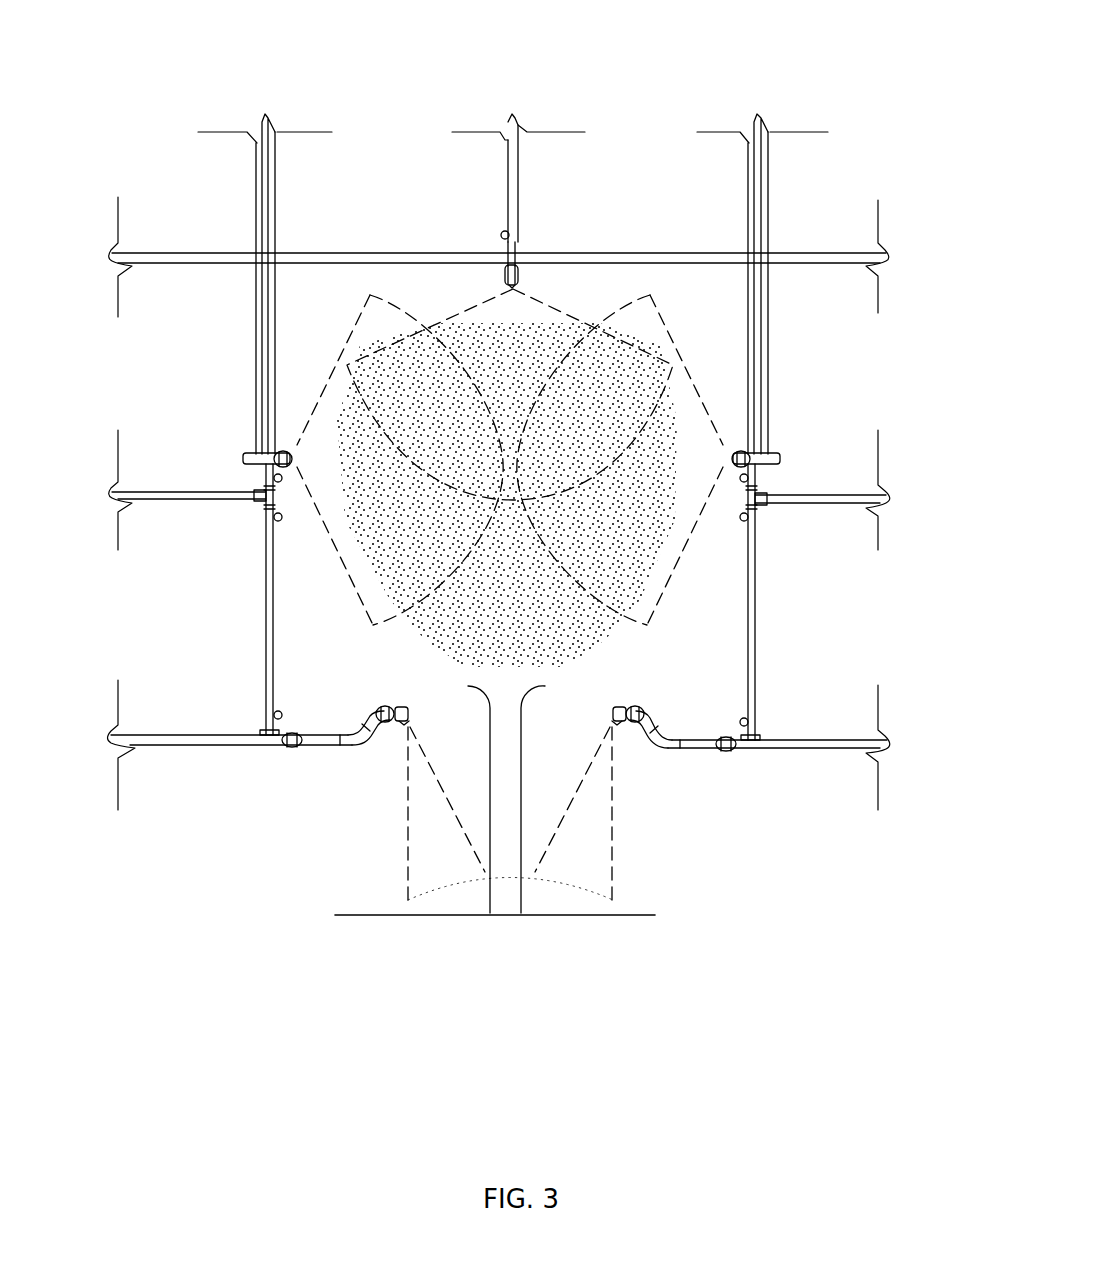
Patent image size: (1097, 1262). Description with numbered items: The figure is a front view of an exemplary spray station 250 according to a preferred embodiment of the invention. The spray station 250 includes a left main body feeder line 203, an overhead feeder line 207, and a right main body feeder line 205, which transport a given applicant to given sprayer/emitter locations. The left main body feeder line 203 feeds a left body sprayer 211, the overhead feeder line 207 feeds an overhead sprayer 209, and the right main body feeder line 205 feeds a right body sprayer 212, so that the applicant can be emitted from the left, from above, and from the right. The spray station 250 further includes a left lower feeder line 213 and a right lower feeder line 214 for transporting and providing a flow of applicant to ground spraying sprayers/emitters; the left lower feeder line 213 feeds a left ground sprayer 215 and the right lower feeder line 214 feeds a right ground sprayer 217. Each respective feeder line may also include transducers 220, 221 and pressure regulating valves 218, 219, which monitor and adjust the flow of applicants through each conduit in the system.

The spray station 250 is at (643, 33).
The left main body feeder line 203 is at (258, 207).
The right main body feeder line 205 is at (765, 280).
The overhead feeder line 207 is at (508, 197).
The overhead sprayer 209 is at (519, 258).
The left body sprayer 211 is at (287, 457).
The right body sprayer 212 is at (738, 452).
The left lower feeder line 213 is at (270, 622).
The right lower feeder line 214 is at (750, 645).
The left ground sprayer 215 is at (396, 722).
The right ground sprayer 217 is at (627, 727).
The pressure regulating valve 218 is at (362, 728).
The pressure regulating valve 219 is at (650, 717).
The transducer 220 is at (290, 747).
The transducer 221 is at (745, 752).